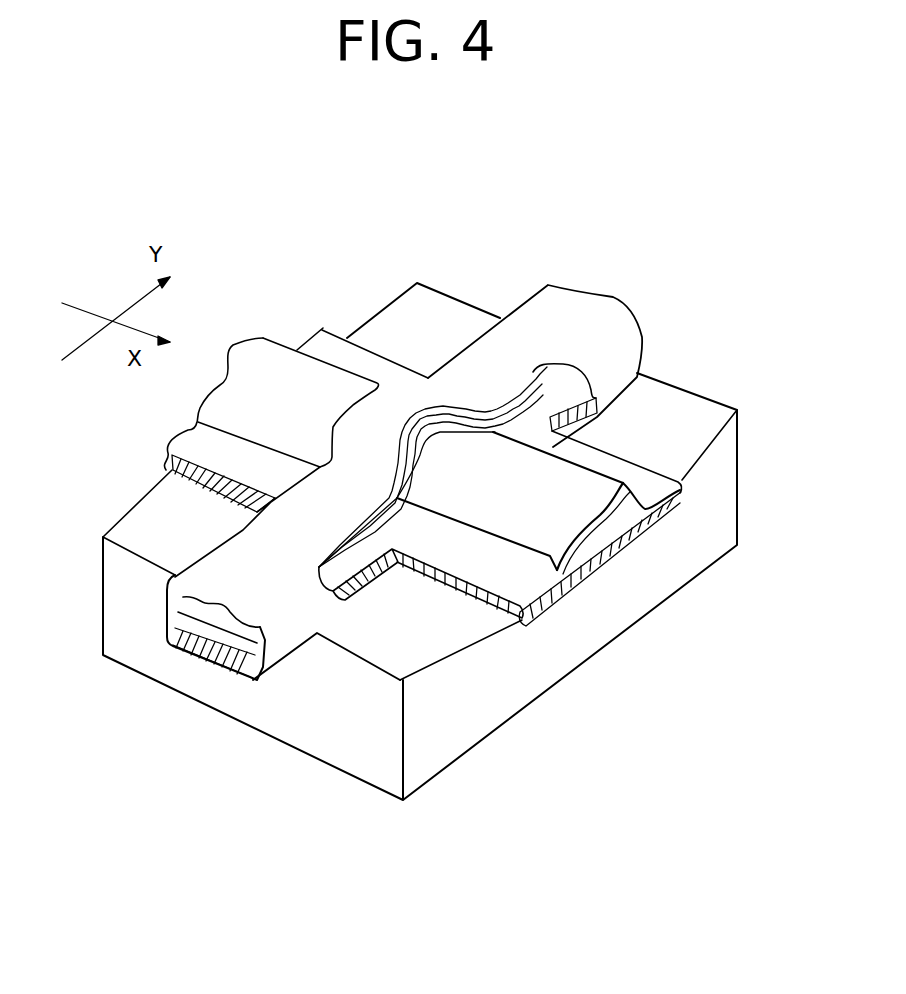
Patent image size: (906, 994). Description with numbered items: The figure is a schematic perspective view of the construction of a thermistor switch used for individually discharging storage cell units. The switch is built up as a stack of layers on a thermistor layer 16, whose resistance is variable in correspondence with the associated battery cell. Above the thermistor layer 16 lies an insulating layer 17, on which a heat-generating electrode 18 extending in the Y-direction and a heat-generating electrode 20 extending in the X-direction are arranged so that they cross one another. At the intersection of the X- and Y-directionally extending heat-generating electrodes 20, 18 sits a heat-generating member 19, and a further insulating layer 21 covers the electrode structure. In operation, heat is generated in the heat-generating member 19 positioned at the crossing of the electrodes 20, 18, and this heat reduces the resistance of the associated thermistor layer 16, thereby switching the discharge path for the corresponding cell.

The thermistor layer 16 is at (137, 642).
The insulating layer 17 is at (670, 503).
The heat-generating electrode 18 is at (457, 420).
The heat-generating member 19 is at (400, 465).
The heat-generating electrode 20 is at (643, 535).
The insulating layer 21 is at (613, 315).